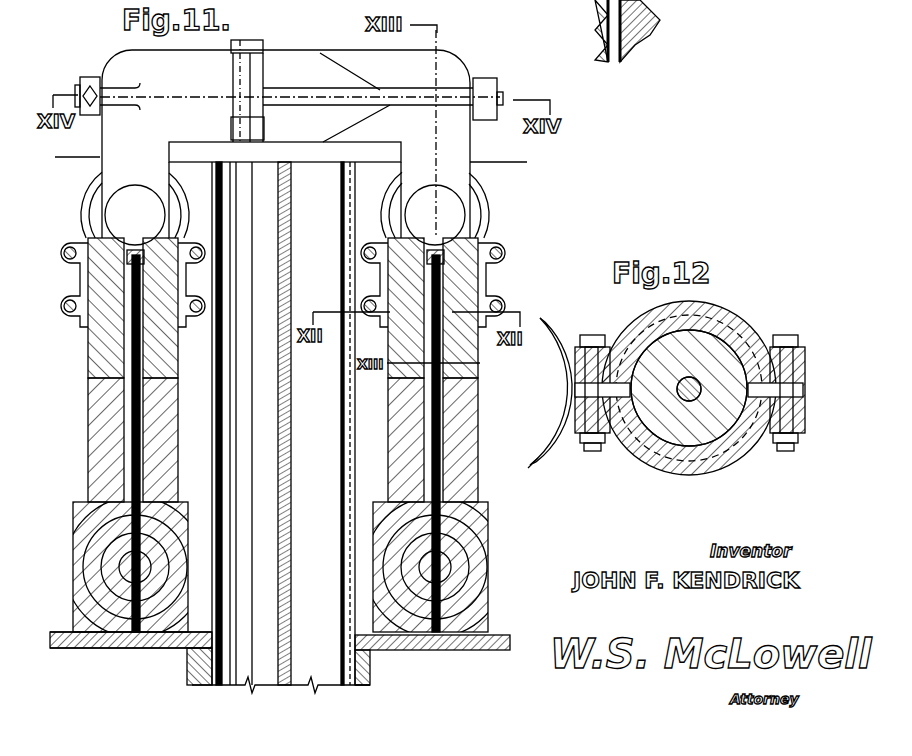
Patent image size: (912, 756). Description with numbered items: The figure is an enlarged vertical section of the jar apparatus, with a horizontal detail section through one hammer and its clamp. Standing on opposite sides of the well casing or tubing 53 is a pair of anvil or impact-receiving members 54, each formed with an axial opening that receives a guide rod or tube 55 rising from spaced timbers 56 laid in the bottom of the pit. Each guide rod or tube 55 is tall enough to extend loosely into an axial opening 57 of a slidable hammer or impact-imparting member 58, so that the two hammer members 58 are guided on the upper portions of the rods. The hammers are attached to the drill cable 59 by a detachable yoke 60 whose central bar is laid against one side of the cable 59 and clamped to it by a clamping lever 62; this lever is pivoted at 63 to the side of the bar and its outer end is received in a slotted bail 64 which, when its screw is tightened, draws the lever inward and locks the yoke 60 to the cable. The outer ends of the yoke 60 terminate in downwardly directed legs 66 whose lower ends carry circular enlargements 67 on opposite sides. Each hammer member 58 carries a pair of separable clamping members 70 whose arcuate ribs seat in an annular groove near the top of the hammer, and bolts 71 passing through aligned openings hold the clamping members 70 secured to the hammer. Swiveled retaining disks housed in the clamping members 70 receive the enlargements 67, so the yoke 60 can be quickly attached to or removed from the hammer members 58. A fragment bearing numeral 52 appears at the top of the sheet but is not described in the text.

In FIG. 12, the tube section fragment 52 is at (596, 43).
In FIG. 11, the well casing or tubing 53 is at (350, 477).
In FIG. 12, the well casing or tubing 53 is at (542, 458).
In FIG. 11, the anvil or impact-receiving members 54 is at (88, 475).
In FIG. 11, the guide rods or tubes 55 is at (130, 432).
In FIG. 12, the guide rods or tubes 55 is at (702, 380).
In FIG. 11, the timbers 56 is at (73, 550).
In FIG. 11, the axial openings 57 is at (130, 258).
In FIG. 11, the hammer or impact-imparting members 58 is at (90, 347).
In FIG. 11, the drill cable 59 is at (290, 262).
In FIG. 11, the detachable yoke 60 is at (96, 138).
In FIG. 11, the clamping lever 62 is at (412, 96).
In FIG. 11, the pivot 63 is at (238, 78).
In FIG. 11, the slotted bail 64 is at (493, 87).
In FIG. 11, the legs 66 is at (115, 168).
In FIG. 11, the circular enlargements 67 is at (115, 212).
In FIG. 12, the clamping members 70 is at (610, 347).
In FIG. 11, the bolts 71 is at (73, 311).
In FIG. 12, the bolts 71 is at (592, 451).